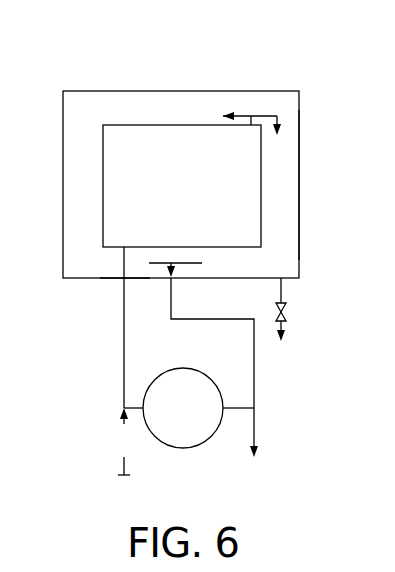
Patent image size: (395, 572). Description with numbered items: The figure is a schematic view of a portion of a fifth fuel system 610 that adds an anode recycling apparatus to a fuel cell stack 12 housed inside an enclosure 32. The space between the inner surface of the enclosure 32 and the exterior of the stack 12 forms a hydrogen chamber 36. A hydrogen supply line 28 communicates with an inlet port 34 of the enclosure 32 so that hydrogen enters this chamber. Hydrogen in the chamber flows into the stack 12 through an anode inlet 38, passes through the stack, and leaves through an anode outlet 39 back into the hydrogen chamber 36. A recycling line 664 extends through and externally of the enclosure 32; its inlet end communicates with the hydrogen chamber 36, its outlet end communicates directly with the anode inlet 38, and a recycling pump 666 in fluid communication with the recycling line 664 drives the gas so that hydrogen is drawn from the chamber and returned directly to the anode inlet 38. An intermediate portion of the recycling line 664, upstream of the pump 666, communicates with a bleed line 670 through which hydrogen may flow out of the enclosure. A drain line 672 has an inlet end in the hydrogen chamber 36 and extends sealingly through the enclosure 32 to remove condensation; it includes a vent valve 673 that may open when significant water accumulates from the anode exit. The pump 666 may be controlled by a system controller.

The fifth fuel system 610 is at (150, 77).
The enclosure 32 is at (299, 91).
The fuel cell stack 12 is at (197, 200).
The hydrogen chamber 36 is at (279, 191).
The anode outlet 39 is at (252, 123).
The anode inlet 38 is at (122, 249).
The inlet port 34 is at (123, 279).
The recycling line 664 is at (254, 355).
The bleed line 670 is at (254, 436).
The drain line 672 is at (282, 297).
The vent valve 673 is at (287, 320).
The recycling pump 666 is at (175, 368).
The hydrogen supply line 28 is at (118, 475).